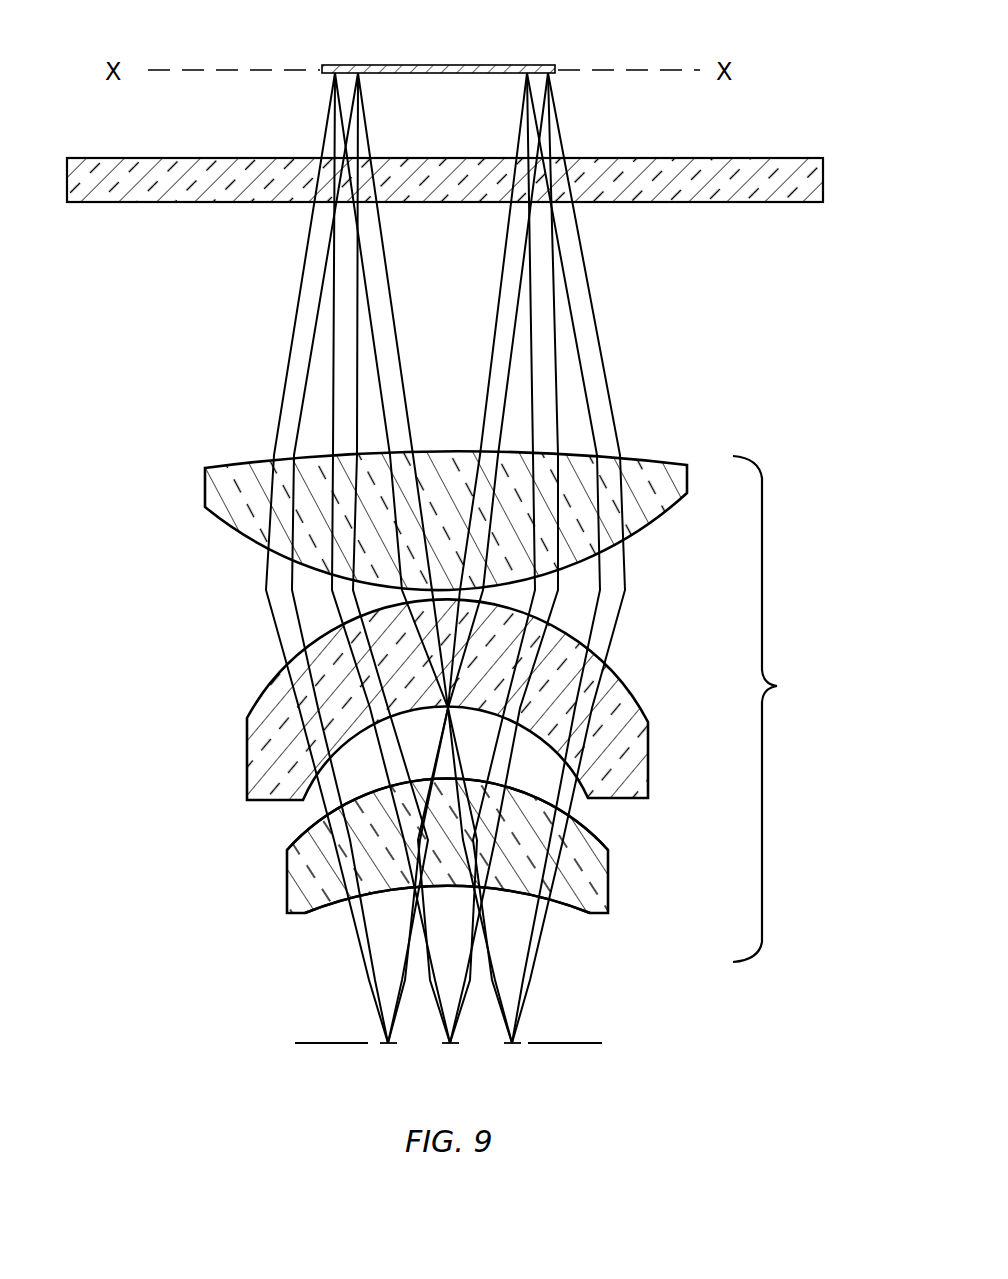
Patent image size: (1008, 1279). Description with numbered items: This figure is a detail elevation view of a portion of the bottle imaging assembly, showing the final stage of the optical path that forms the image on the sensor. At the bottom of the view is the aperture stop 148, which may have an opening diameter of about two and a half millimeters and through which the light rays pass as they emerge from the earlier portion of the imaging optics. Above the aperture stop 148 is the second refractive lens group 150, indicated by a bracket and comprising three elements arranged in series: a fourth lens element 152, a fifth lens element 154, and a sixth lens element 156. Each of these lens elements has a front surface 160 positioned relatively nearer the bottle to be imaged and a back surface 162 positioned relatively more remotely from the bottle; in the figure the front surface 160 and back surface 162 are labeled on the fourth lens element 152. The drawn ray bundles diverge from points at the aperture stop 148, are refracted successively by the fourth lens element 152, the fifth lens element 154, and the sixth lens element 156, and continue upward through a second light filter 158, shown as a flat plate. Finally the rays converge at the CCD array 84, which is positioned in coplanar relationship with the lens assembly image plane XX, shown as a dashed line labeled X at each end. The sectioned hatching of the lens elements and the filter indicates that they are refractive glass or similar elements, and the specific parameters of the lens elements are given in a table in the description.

The CCD array 84 is at (503, 61).
The second light filter 158 is at (826, 181).
The sixth lens element 156 is at (205, 490).
The fifth lens element 154 is at (247, 756).
The fourth lens element 152 is at (287, 885).
The back surface 162 is at (588, 831).
The front surface 160 is at (574, 909).
The aperture stop 148 is at (308, 1043).
The second refractive lens group 150 is at (788, 709).